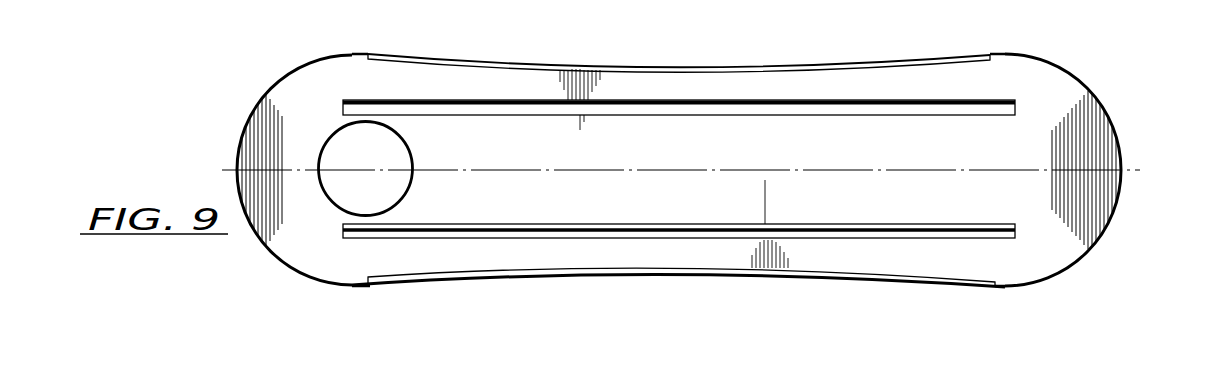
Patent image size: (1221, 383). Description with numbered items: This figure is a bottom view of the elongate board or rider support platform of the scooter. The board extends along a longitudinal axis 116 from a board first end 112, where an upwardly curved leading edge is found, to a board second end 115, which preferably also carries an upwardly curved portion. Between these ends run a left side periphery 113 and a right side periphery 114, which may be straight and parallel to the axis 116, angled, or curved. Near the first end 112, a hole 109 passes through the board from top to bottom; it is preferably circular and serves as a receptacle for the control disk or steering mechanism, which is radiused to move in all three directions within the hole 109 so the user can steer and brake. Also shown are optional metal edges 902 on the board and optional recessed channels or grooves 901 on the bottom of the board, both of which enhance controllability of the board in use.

The hole 109 is at (392, 153).
The board first end 112 is at (309, 61).
The left side periphery 113 is at (507, 58).
The right side periphery 114 is at (703, 273).
The board second end 115 is at (1110, 214).
The longitudinal axis 116 is at (1123, 172).
The recessed channels or grooves 901 is at (800, 106).
The metal edges 902 is at (646, 68).